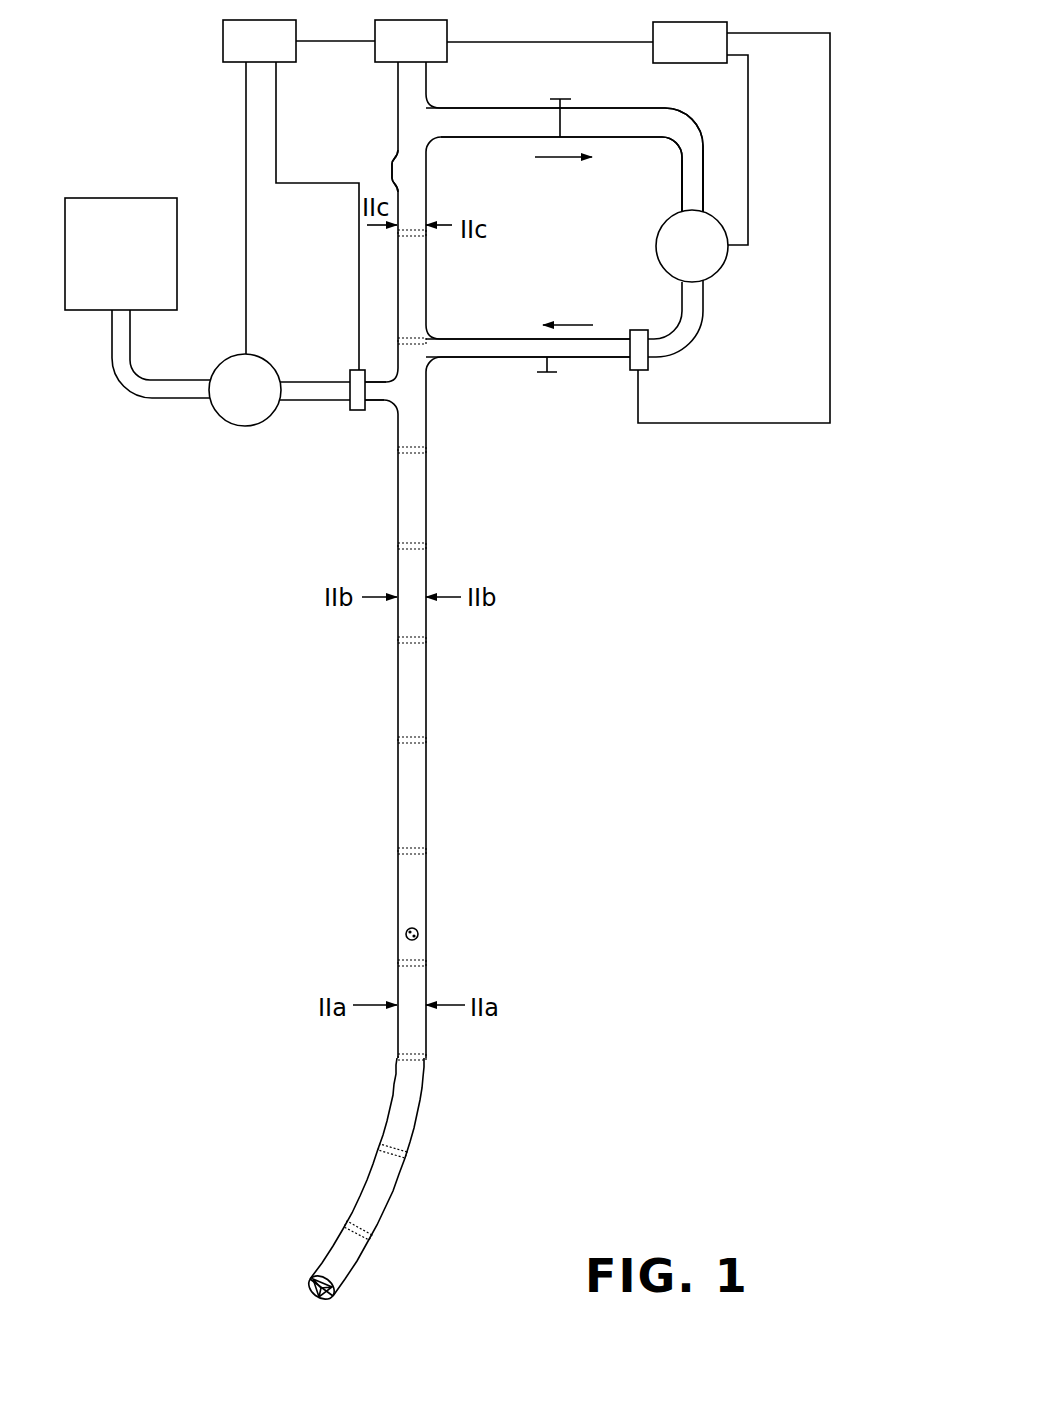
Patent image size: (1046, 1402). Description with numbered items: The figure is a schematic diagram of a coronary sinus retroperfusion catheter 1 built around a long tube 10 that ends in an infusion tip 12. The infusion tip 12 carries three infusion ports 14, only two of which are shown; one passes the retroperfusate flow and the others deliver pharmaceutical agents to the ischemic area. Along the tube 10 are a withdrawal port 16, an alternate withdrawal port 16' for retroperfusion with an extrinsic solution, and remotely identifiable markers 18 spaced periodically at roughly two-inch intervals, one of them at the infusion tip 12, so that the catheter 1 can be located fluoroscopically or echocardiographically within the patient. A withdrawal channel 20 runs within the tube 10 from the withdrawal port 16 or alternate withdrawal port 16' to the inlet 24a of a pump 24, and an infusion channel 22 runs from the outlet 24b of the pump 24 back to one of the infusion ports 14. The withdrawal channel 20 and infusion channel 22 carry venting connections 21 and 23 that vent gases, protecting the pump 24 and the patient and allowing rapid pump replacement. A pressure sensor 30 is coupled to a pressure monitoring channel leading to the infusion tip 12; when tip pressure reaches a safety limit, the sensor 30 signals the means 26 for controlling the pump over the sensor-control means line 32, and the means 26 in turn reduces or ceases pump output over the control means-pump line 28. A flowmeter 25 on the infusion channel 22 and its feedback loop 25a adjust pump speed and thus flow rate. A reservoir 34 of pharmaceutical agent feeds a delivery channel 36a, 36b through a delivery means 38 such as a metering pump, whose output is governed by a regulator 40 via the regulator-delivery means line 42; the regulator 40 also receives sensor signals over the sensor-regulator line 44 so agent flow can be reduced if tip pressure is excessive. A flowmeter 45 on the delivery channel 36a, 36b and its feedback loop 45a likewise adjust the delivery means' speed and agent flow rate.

The catheter 1 is at (624, 793).
The tube 10 is at (428, 794).
The infusion tip 12 is at (300, 1273).
The infusion ports 14 is at (320, 1308).
The withdrawal port 16 is at (442, 914).
The alternate withdrawal port 16' is at (378, 155).
The remotely identifiable markers 18 is at (397, 852).
The withdrawal channel 20 is at (487, 138).
The venting connection 21 is at (555, 121).
The infusion channel 22 is at (468, 338).
The venting connection 23 is at (548, 352).
The pump 24 is at (720, 267).
The inlet of pump 24a is at (680, 200).
The outlet of pump 24b is at (680, 290).
The flowmeter 25 is at (645, 372).
The feedback loop 25a is at (831, 257).
The means for controlling pump 26 is at (698, 21).
The control means-pump line 28 is at (749, 133).
The pressure sensor 30 is at (380, 63).
The sensor-control means line 32 is at (542, 38).
The reservoir 34 is at (82, 312).
The pharmaceutical agent delivery channel 36a is at (150, 400).
The pharmaceutical agent delivery channel 36b is at (325, 402).
The delivery means 38 is at (247, 430).
The regulator 40 is at (223, 40).
The regulator-delivery means line 42 is at (247, 208).
The sensor-regulator line 44 is at (322, 43).
The flowmeter 45 is at (362, 410).
The feedback loop 45a is at (359, 280).